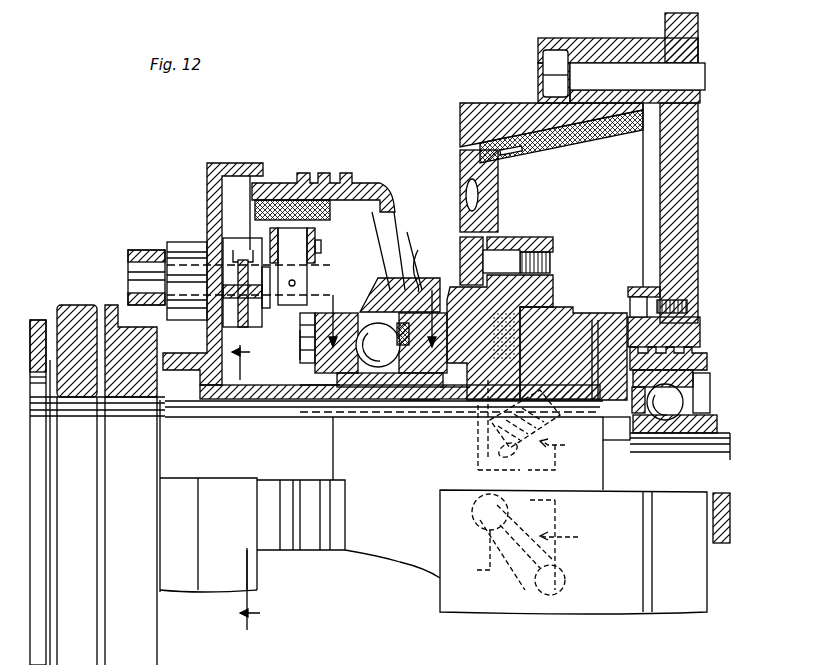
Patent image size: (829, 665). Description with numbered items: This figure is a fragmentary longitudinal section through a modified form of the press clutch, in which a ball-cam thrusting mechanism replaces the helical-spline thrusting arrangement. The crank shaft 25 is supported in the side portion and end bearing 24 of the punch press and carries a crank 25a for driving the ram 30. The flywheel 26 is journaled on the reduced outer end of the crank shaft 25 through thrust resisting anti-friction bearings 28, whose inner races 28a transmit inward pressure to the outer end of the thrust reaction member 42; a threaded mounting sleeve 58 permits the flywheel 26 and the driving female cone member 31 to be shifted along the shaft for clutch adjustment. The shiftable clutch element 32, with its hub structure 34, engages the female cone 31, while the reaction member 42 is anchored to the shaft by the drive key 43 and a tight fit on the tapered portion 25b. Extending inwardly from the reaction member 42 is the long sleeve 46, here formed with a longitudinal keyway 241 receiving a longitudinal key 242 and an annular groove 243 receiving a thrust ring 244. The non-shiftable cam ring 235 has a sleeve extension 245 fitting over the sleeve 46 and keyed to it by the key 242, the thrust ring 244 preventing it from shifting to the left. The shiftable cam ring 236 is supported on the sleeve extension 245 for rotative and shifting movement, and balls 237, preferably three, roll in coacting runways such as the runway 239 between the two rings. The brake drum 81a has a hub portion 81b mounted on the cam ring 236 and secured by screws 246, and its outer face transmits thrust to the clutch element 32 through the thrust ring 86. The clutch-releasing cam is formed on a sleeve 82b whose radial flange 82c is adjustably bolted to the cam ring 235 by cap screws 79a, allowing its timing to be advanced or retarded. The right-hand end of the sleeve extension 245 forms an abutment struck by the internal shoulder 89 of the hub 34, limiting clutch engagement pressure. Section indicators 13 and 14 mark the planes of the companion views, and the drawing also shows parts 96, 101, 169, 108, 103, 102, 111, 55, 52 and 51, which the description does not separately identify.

The housing 96 is at (208, 170).
The bearing 101 is at (275, 182).
The brake drum 81a is at (370, 185).
The female cone member 31 is at (490, 108).
The shiftable clutch element 32 is at (470, 158).
The flywheel 26 is at (675, 146).
The lever 169 is at (230, 255).
The shaft 108 is at (145, 255).
The pin 103 is at (280, 243).
The bracket 102 is at (308, 250).
The hub portion 81b is at (408, 232).
The shiftable cam ring 236 is at (429, 262).
The screws 246 is at (500, 185).
The hub structure 34 is at (535, 248).
The non-shiftable cam ring 235 is at (362, 300).
The section line 14 is at (383, 305).
The thrust ring 86 is at (501, 261).
The thrust reaction member 42 is at (570, 318).
The nut 55 is at (630, 307).
The ram 30 is at (38, 320).
The side portion and end bearing of the punch press 24 is at (108, 300).
The gear 111 is at (185, 312).
The cap screws 79a is at (302, 330).
The radial flange 82c is at (302, 346).
The section line 13 is at (240, 481).
The balls 237 is at (381, 343).
The internal shoulder 89 is at (520, 270).
The threaded mounting sleeve 58 is at (708, 352).
The anti-friction bearings 28 is at (683, 402).
The inner races 28a is at (718, 428).
The thrust ring 244 is at (335, 378).
The crank 25a is at (45, 450).
The sleeve 82b is at (230, 400).
The runway 239 is at (370, 387).
The annular groove 243 is at (360, 388).
The longitudinal key 242 is at (450, 390).
The sleeve 46 is at (490, 432).
The arrow 52 is at (556, 454).
The drive key 43 is at (612, 442).
The sleeve extension 245 is at (405, 400).
The longitudinal keyway 241 is at (478, 445).
The crank shaft 25 is at (162, 497).
The tapered portion 25b is at (590, 480).
The crank 51 is at (534, 544).